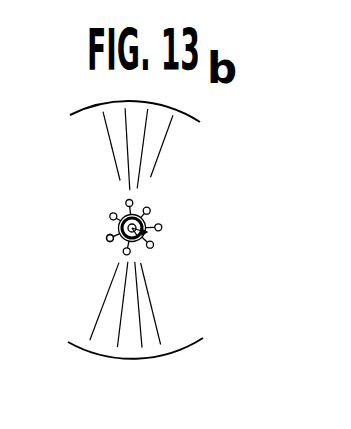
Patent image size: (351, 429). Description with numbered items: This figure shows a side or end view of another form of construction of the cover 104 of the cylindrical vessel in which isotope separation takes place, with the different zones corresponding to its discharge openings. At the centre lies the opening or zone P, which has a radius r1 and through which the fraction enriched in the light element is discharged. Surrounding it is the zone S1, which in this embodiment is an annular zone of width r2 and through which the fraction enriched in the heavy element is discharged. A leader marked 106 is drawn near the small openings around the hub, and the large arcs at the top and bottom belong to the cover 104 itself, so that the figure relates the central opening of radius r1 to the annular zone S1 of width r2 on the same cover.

The cover 104 is at (96, 352).
The rotor element 106 is at (110, 241).
The opening P is at (137, 225).
The zone S1 is at (108, 228).
The radius r1 is at (145, 232).
The width r2 is at (138, 237).